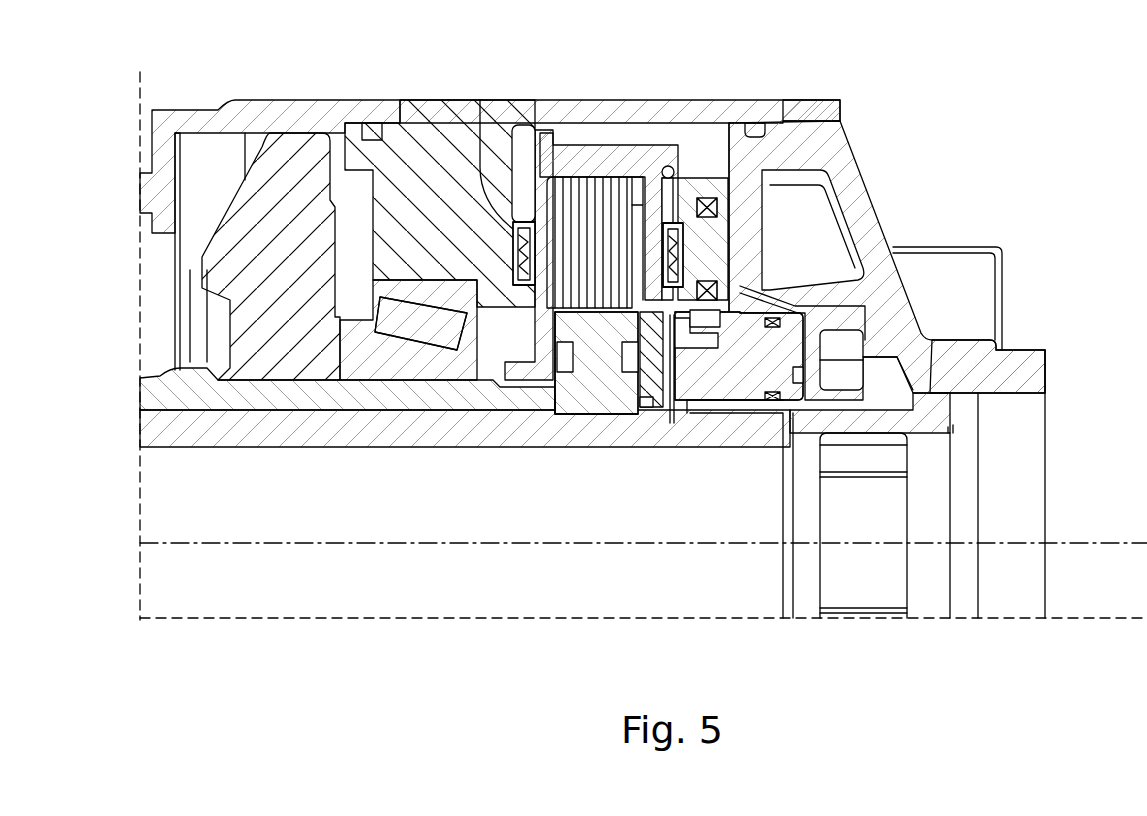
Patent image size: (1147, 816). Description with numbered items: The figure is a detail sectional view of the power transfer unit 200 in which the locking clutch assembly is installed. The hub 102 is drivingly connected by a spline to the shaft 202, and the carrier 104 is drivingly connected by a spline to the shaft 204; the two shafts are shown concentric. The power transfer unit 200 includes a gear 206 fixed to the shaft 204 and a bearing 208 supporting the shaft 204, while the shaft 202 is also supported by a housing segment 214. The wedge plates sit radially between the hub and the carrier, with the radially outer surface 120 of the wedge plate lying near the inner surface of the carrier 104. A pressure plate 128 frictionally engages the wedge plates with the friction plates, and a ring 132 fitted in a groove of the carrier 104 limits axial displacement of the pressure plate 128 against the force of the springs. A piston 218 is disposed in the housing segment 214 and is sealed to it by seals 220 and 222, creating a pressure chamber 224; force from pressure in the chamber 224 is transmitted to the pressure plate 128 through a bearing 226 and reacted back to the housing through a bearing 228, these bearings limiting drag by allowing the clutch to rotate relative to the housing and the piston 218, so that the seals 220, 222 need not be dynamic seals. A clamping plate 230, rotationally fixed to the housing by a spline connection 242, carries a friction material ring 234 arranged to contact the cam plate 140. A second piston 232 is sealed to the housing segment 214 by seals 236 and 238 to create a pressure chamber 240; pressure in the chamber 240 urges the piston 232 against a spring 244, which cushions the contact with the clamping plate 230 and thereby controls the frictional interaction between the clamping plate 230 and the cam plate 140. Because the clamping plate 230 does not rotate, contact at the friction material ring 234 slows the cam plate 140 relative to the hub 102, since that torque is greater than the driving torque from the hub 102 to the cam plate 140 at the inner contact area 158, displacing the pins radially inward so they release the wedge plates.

The power transfer unit 200 is at (1018, 104).
The hub 102 is at (565, 395).
The carrier 104 is at (570, 173).
The radially outer surface 120 is at (598, 150).
The pressure plate 128 is at (673, 166).
The ring 132 is at (683, 222).
The cam plate 140 is at (647, 387).
The inner contact area 158 is at (627, 392).
The shaft 202 is at (326, 441).
The shaft 204 is at (281, 403).
The gear 206 is at (261, 248).
The bearing 208 is at (371, 368).
The housing segment 214 is at (812, 308).
The piston 218 is at (768, 205).
The seal 220 is at (740, 253).
The seal 222 is at (738, 207).
The pressure chamber 224 is at (837, 100).
The bearing 226 is at (708, 197).
The bearing 228 is at (516, 222).
The clamping plate 230 is at (411, 206).
The piston 232 is at (736, 380).
The friction material ring 234 is at (660, 390).
The seal 236 is at (937, 340).
The seal 238 is at (932, 420).
The pressure chamber 240 is at (922, 395).
The spline connection 242 is at (866, 335).
The spring 244 is at (701, 328).